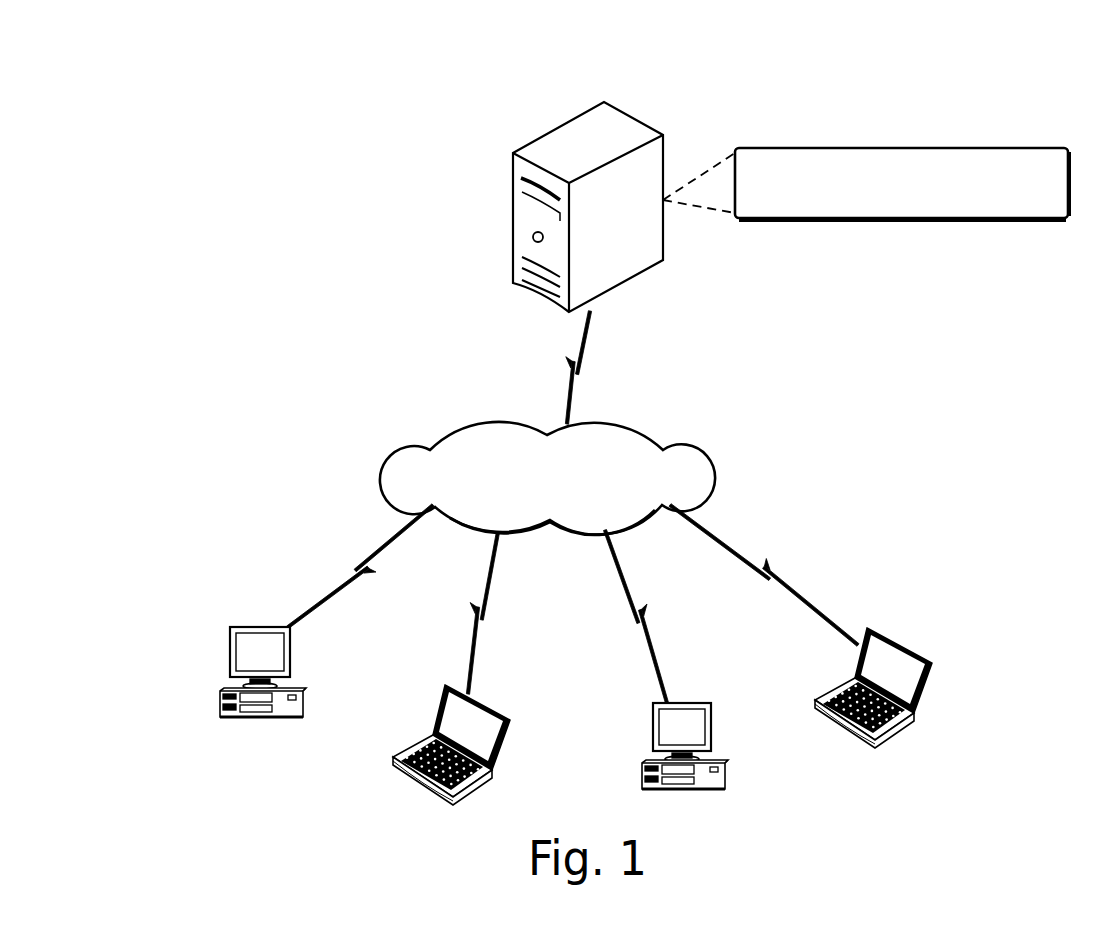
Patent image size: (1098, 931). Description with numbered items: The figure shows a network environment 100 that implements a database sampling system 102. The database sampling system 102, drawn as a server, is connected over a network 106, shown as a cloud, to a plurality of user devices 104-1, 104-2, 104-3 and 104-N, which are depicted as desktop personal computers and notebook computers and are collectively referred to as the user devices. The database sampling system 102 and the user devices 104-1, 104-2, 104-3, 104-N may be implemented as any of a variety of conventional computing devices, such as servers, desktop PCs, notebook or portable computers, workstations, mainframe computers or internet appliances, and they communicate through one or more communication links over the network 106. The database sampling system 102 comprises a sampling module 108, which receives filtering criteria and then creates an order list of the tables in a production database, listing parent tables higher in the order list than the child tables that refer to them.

The network environment 100 is at (638, 62).
The database sampling system 102 is at (560, 125).
The user device 104-1 is at (242, 628).
The user device 104-2 is at (440, 708).
The user device 104-3 is at (655, 727).
The user device 104-N is at (848, 680).
The network 106 is at (573, 507).
The sampling module 108 is at (902, 184).